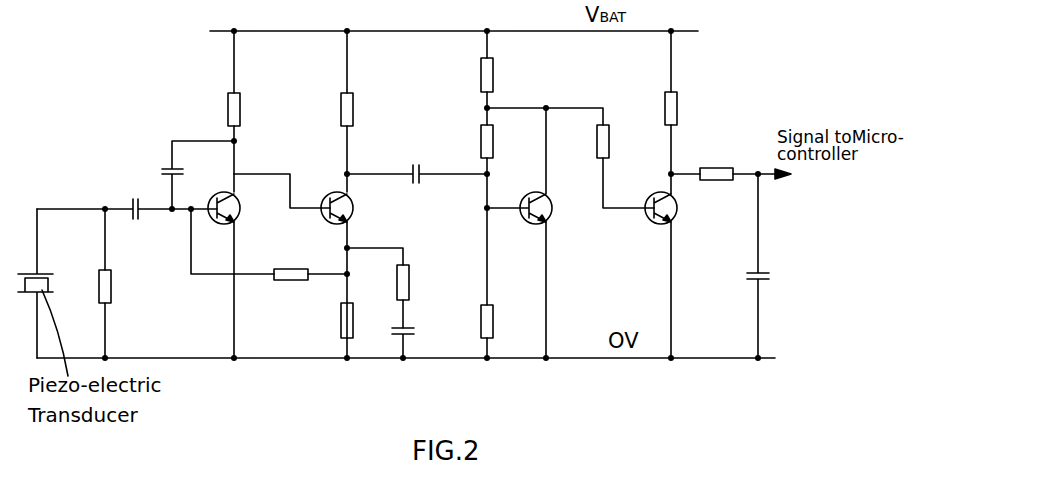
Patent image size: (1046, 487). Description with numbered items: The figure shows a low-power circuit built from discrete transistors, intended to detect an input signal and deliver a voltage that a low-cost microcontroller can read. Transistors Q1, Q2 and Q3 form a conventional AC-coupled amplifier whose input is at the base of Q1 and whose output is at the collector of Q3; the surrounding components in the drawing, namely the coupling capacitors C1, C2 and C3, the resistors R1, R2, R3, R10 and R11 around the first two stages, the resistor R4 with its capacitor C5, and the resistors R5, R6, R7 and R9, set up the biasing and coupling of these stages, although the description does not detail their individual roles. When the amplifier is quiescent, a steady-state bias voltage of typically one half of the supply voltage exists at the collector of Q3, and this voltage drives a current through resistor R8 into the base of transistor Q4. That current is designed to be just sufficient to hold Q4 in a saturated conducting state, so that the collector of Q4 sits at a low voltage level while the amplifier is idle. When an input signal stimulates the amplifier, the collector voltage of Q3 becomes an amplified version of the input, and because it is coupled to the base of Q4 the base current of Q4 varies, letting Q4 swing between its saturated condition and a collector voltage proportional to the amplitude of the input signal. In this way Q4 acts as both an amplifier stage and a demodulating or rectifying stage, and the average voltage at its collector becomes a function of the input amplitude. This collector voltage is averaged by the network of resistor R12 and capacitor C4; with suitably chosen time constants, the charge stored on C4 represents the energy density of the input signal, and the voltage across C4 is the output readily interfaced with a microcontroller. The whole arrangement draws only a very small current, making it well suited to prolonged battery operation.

The resistor R1 is at (254, 111).
The resistor R2 is at (269, 244).
The resistor R3 is at (365, 111).
The resistor R4 is at (397, 288).
The resistor R5 is at (504, 331).
The resistor R6 is at (504, 78).
The resistor R7 is at (504, 214).
The resistor R8 is at (570, 158).
The resistor R9 is at (690, 112).
The resistor R10 is at (130, 283).
The resistor R11 is at (328, 320).
The resistor R12 is at (714, 160).
The capacitor C1 is at (127, 223).
The capacitor C2 is at (183, 175).
The capacitor C3 is at (417, 158).
The capacitor C4 is at (776, 266).
The capacitor C5 is at (420, 337).
The transistor Q1 is at (269, 266).
The transistor Q2 is at (355, 275).
The transistor Q3 is at (537, 233).
The transistor Q4 is at (680, 275).